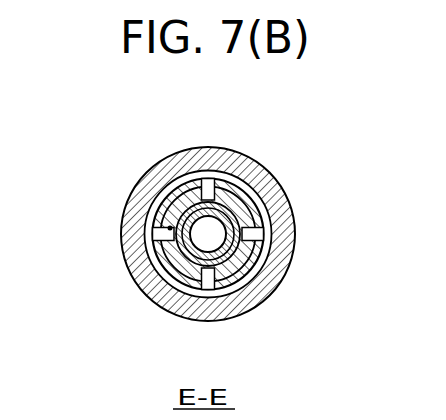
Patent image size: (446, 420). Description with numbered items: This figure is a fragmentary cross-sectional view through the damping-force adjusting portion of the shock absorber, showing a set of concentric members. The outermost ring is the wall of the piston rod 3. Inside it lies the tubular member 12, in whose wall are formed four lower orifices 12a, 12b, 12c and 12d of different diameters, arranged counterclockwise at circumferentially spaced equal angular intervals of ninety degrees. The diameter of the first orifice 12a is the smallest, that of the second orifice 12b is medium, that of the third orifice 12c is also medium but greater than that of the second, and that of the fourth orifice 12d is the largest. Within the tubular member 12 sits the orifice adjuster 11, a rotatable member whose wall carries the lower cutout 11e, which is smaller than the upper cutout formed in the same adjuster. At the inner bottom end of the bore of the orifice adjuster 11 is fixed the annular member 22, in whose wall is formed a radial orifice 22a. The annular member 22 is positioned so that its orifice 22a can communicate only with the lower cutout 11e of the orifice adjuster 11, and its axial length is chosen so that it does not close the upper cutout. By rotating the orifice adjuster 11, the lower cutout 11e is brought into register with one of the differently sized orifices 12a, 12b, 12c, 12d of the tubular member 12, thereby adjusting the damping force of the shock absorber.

The piston rod 3 is at (269, 160).
The orifice adjuster 11 is at (249, 214).
The lower cutout 11e is at (157, 268).
The tubular member 12 is at (252, 272).
The first lower orifice 12a is at (206, 274).
The second lower orifice 12b is at (250, 234).
The third lower orifice 12c is at (210, 196).
The fourth lower orifice 12d is at (170, 232).
The annular member 22 is at (173, 207).
The orifice 22a is at (170, 228).